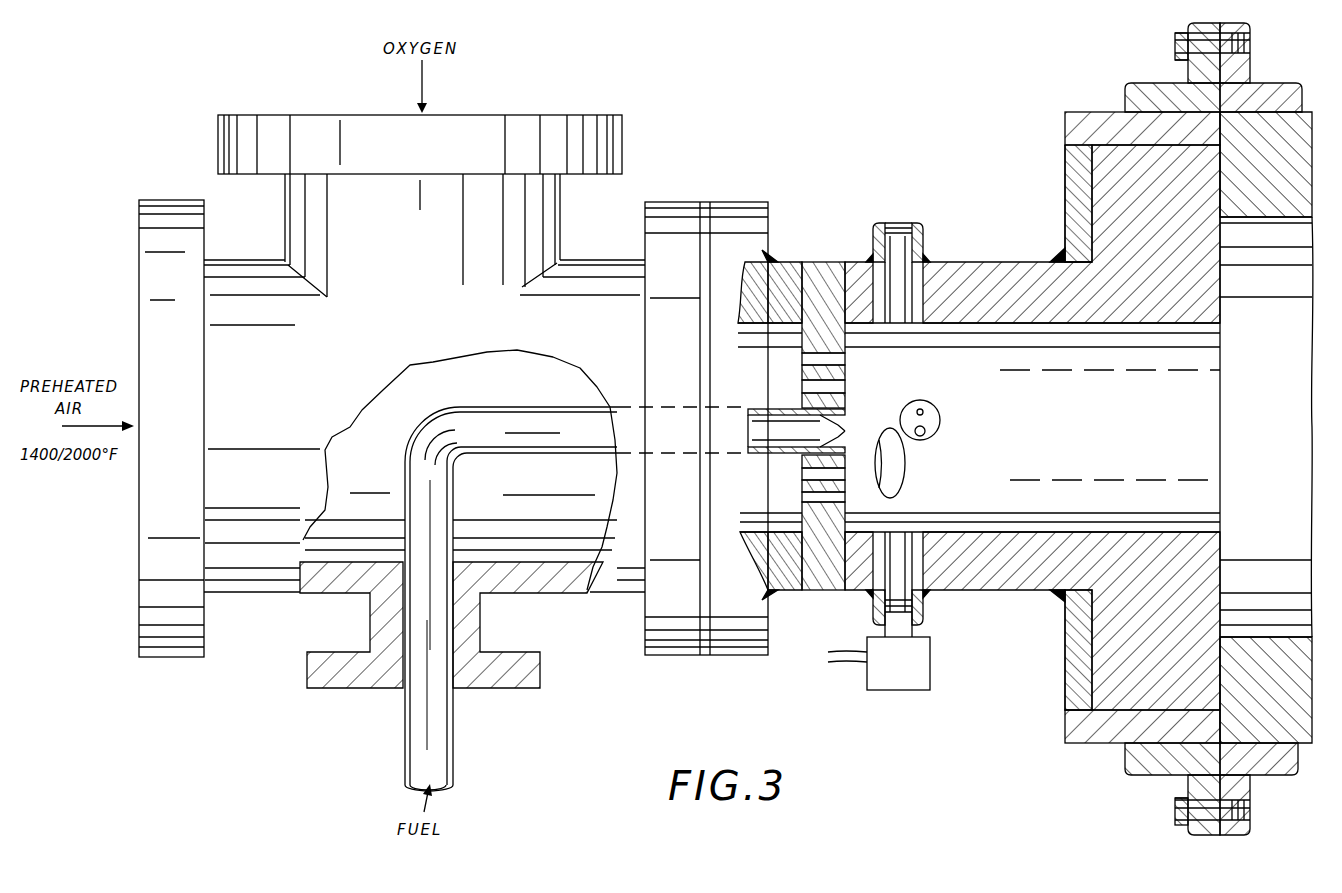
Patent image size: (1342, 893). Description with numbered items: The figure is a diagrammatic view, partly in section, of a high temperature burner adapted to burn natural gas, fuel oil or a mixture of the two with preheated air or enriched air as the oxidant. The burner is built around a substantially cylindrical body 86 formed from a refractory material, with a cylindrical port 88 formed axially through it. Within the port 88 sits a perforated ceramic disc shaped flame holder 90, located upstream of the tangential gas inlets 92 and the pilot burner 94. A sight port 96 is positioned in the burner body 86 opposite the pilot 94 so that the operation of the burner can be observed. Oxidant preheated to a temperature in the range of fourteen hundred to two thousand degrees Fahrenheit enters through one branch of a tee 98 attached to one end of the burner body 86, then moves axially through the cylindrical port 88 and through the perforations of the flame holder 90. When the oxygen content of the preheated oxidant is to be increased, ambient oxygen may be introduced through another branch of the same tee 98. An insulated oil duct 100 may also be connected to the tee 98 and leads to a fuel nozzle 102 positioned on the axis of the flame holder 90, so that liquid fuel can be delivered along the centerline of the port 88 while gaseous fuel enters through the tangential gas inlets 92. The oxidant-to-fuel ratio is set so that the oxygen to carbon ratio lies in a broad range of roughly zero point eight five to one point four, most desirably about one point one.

The cylindrical body 86 is at (1013, 272).
The cylindrical port 88 is at (1025, 323).
The perforated ceramic disc shaped flame holder 90 is at (847, 333).
The tangential gas inlets 92 is at (867, 606).
The pilot burner 94 is at (932, 652).
The sight port 96 is at (905, 212).
The tee 98 is at (548, 597).
The insulated oil duct 100 is at (502, 453).
The fuel nozzle 102 is at (838, 427).